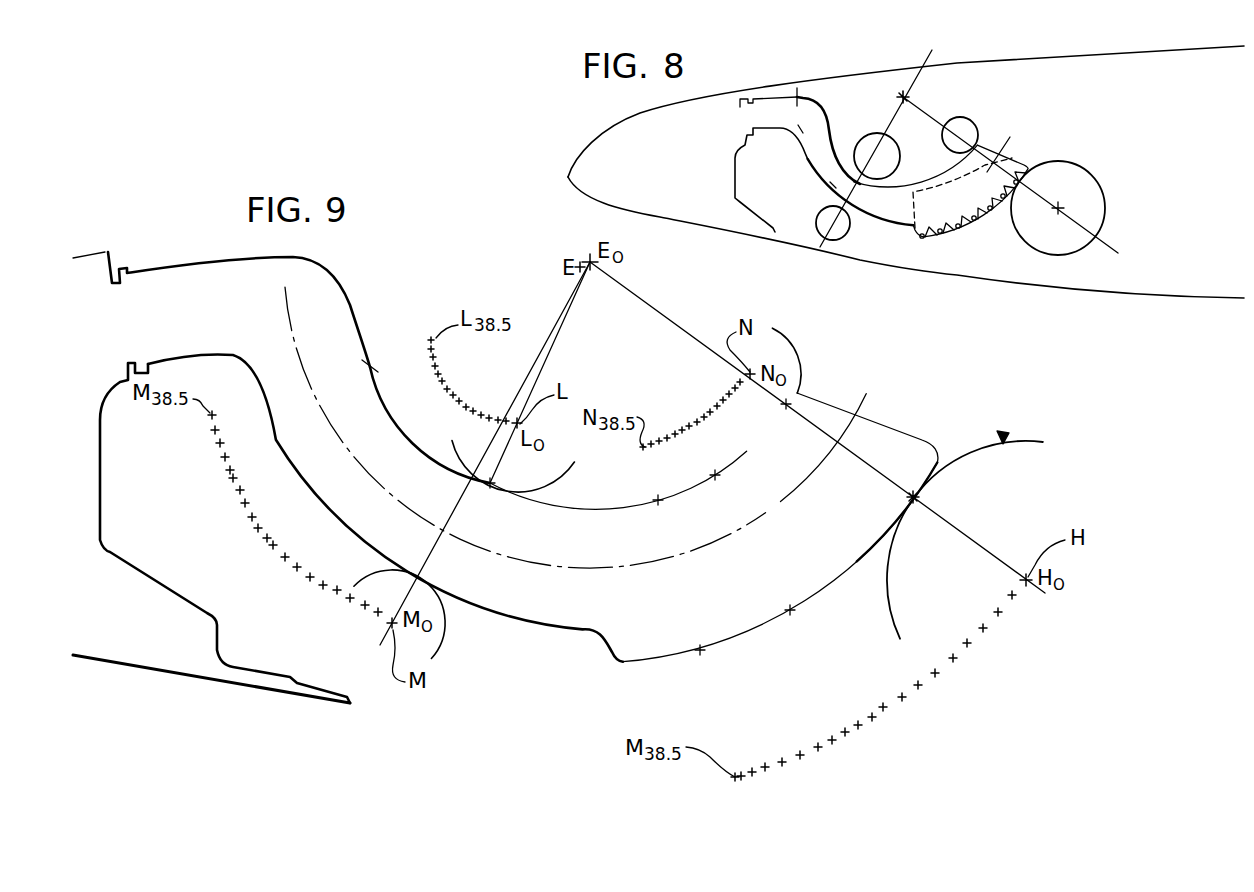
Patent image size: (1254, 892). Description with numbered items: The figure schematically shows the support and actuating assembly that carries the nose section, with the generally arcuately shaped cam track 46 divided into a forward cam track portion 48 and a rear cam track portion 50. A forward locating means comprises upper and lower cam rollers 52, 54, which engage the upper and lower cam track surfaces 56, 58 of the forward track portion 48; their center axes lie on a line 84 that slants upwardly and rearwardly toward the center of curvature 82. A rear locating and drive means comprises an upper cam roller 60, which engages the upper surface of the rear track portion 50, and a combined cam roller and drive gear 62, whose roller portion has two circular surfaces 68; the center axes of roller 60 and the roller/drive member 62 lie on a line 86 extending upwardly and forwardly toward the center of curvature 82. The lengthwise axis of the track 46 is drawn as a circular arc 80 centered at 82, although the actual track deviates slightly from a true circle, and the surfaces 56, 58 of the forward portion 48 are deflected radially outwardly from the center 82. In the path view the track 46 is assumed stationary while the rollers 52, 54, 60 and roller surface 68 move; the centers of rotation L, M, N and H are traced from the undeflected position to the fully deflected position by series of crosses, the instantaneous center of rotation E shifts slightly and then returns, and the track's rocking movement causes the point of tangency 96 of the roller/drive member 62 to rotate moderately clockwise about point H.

In FIG. 8, the cam track 46 is at (895, 225).
In FIG. 9, the cam track 46 is at (902, 433).
In FIG. 9, the forward cam track portion 48 is at (363, 340).
In FIG. 9, the rear cam track portion 50 is at (752, 441).
In FIG. 8, the upper cam roller 52 is at (866, 136).
In FIG. 9, the upper cam roller 52 is at (520, 490).
In FIG. 8, the lower cam roller 54 is at (840, 240).
In FIG. 9, the lower cam roller 54 is at (446, 626).
In FIG. 9, the upper cam track surface 56 is at (396, 428).
In FIG. 9, the lower cam track surface 58 is at (306, 503).
In FIG. 8, the upper rear cam roller 60 is at (975, 124).
In FIG. 9, the upper rear cam roller 60 is at (800, 370).
In FIG. 9, the combined cam roller and drive gear 62 is at (1008, 432).
In FIG. 8, the circular surfaces of roller portion 68 is at (1105, 207).
In FIG. 9, the circular surfaces of roller portion 68 is at (1043, 443).
In FIG. 8, the circumferential axis 80 is at (1012, 140).
In FIG. 9, the circumferential axis 80 is at (868, 392).
In FIG. 8, the center of curvature 82 is at (913, 98).
In FIG. 8, the line through forward roller axes 84 is at (934, 54).
In FIG. 8, the line through rear roller axes 86 is at (1118, 252).
In FIG. 9, the line through rear roller axes 86 is at (973, 543).
In FIG. 9, the point of tangency 96 is at (920, 497).